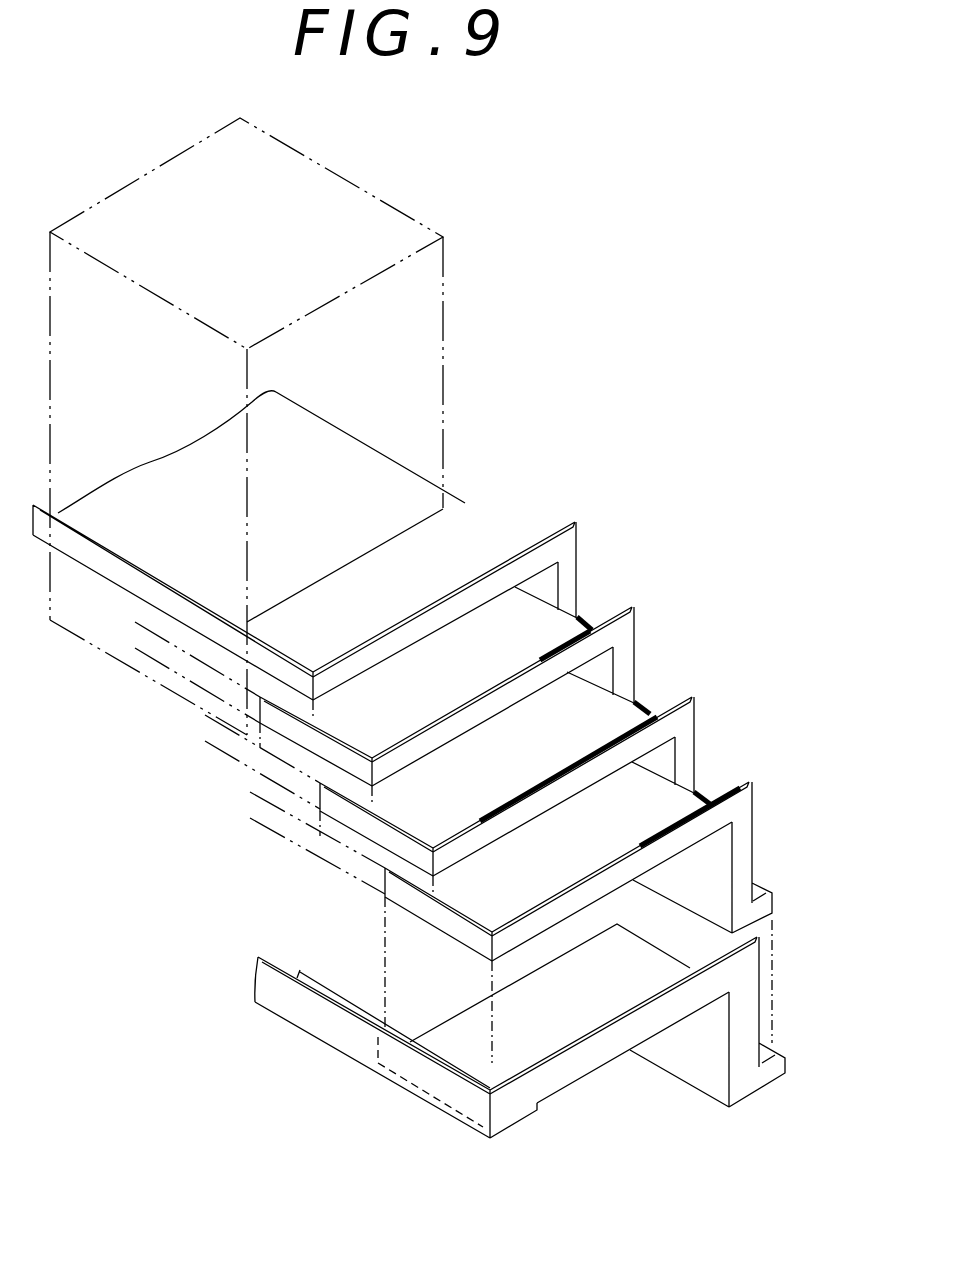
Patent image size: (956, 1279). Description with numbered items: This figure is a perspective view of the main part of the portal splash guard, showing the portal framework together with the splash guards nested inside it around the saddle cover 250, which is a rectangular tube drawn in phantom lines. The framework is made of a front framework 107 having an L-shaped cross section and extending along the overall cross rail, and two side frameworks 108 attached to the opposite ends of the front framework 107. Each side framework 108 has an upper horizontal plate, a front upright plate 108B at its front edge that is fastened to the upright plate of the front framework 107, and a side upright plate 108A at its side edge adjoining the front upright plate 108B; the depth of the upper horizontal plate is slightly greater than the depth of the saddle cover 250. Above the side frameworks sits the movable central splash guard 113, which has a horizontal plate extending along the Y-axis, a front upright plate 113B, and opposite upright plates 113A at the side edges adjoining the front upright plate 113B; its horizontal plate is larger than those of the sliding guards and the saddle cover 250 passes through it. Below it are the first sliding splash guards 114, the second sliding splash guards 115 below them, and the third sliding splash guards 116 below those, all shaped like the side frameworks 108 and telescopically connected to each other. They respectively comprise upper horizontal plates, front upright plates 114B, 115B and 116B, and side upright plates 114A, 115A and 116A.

The saddle cover 250 is at (440, 316).
The movable central splash guard 113 is at (336, 559).
The opposite upright plates 113A is at (470, 583).
The front upright plate 113B is at (280, 642).
The first sliding splash guards 114 is at (417, 664).
The side upright plate 114A is at (510, 675).
The front upright plate 114B is at (340, 738).
The second sliding splash guards 115 is at (479, 756).
The side upright plate 115A is at (577, 770).
The front upright plate 115B is at (410, 810).
The third sliding splash guards 116 is at (514, 885).
The side upright plate 116A is at (608, 862).
The front upright plate 116B is at (460, 918).
The front framework 107 is at (337, 1025).
The side frameworks 108 is at (511, 1060).
The side upright plate 108A is at (603, 1037).
The front upright plate 108B is at (458, 1060).